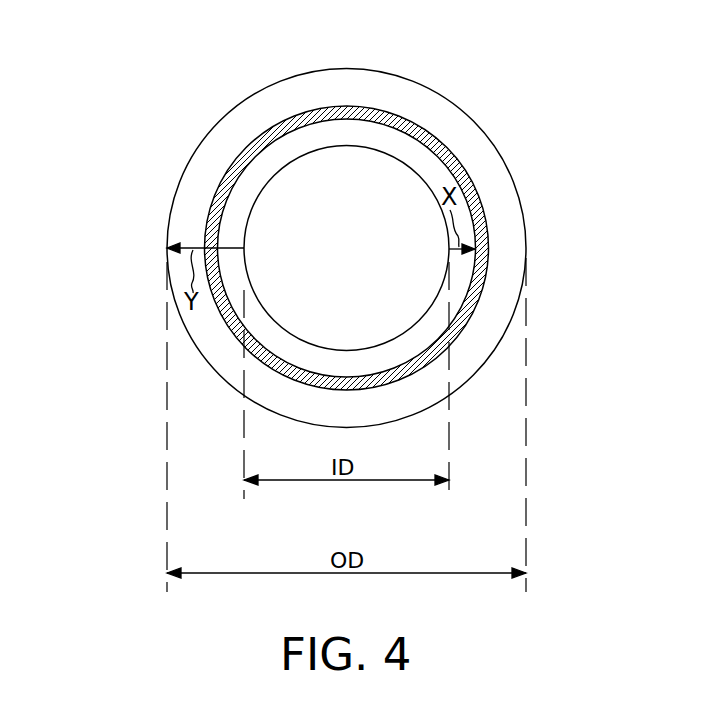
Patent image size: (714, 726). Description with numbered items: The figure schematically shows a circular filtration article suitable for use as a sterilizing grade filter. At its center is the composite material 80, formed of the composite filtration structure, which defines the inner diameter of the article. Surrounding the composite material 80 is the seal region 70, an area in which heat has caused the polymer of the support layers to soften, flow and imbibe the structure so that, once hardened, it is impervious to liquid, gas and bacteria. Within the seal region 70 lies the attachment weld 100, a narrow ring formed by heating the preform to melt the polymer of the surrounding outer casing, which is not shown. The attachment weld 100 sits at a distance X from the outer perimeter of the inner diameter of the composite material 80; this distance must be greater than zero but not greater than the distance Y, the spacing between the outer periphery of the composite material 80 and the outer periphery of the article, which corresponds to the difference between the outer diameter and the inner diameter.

The seal region 70 is at (221, 148).
The composite material 80 is at (362, 257).
The attachment weld 100 is at (450, 150).